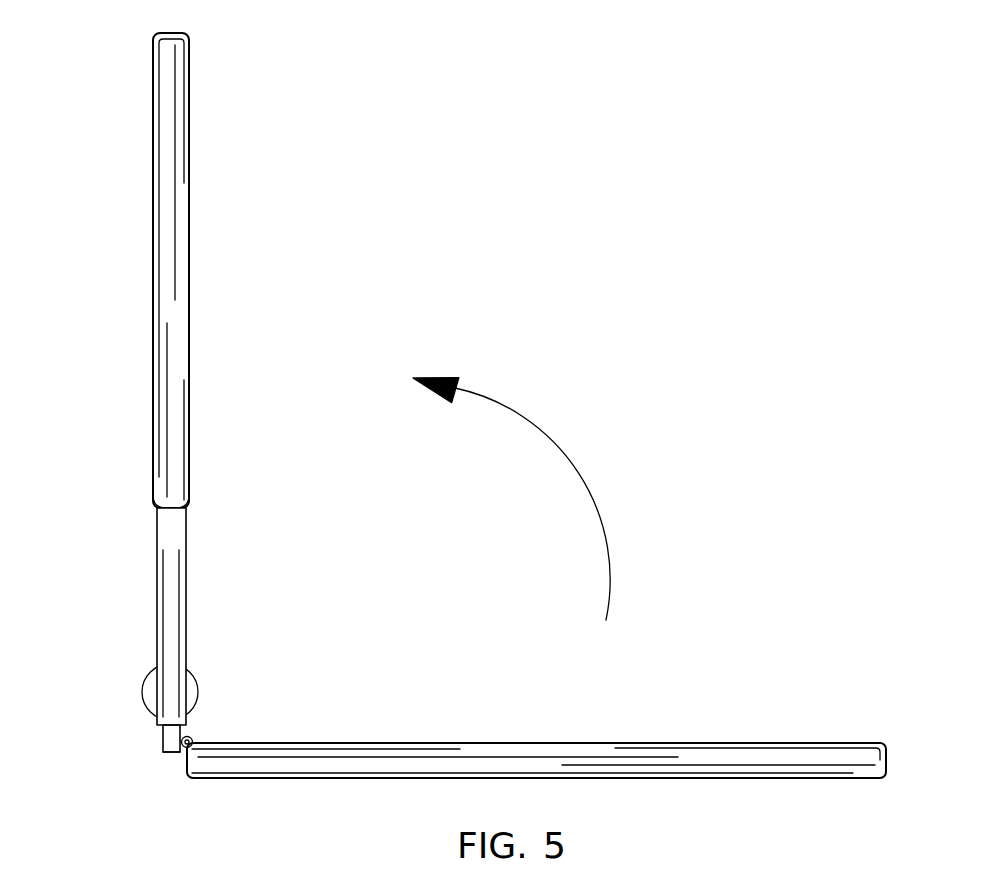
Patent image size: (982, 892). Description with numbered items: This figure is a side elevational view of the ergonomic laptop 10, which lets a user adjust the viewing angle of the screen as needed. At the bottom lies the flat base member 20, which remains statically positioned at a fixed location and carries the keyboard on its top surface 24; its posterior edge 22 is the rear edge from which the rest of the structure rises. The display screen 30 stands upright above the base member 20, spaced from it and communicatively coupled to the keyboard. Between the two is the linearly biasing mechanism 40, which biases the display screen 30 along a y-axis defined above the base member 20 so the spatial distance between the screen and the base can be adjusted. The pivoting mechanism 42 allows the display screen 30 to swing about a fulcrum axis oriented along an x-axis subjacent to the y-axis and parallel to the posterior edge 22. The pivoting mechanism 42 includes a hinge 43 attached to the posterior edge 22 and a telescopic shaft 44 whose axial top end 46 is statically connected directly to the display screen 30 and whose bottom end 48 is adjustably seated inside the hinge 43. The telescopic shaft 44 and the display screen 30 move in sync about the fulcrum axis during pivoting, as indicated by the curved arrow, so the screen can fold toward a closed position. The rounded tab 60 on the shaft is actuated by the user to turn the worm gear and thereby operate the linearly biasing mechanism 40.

The ergonomic laptop 10 is at (930, 104).
The base member 20 is at (788, 755).
The posterior edge 22 is at (268, 742).
The top surface 24 is at (513, 743).
The display screen 30 is at (168, 268).
The linearly biasing mechanism 40 is at (138, 630).
The pivoting mechanism 42 is at (143, 775).
The hinge 43 is at (195, 740).
The telescopic shaft 44 is at (203, 586).
The axial top end 46 is at (160, 520).
The bottom end 48 is at (165, 743).
The tab 60 is at (197, 688).